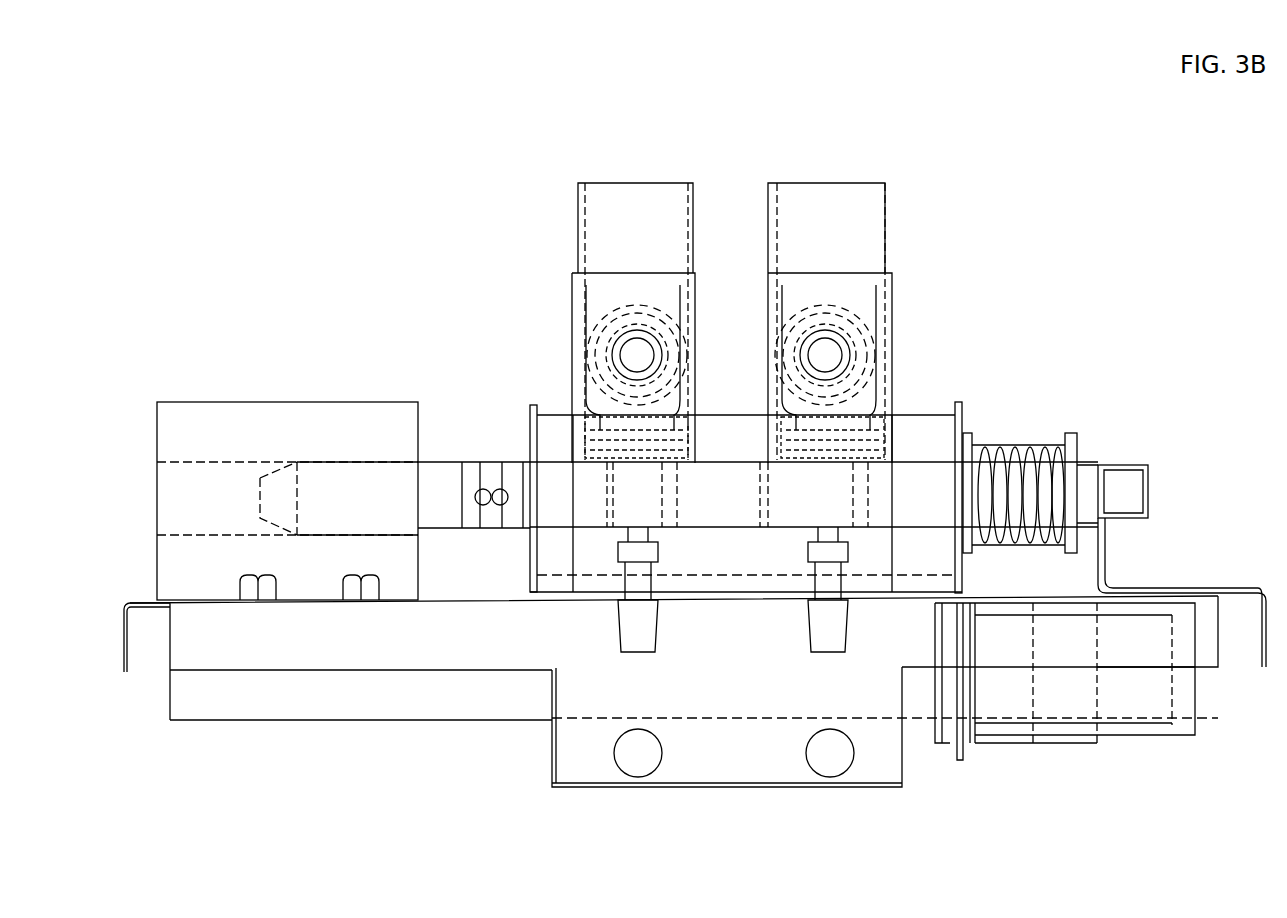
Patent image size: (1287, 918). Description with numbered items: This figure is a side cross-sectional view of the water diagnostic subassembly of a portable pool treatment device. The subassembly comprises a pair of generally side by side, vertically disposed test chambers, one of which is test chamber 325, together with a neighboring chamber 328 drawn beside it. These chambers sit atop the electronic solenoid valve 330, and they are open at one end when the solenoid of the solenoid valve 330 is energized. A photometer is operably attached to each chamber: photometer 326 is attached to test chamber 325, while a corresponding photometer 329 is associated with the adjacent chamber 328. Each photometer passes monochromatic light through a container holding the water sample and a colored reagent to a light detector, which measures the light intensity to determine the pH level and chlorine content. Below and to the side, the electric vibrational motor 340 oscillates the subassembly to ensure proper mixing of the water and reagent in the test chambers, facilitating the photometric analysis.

The first solenoid 328 is at (605, 218).
The test chamber 325 is at (847, 193).
The first coil 329 is at (603, 350).
The photometer 326 is at (857, 333).
The electronic solenoid valve 330 is at (930, 432).
The electric vibrational motor 340 is at (1137, 707).